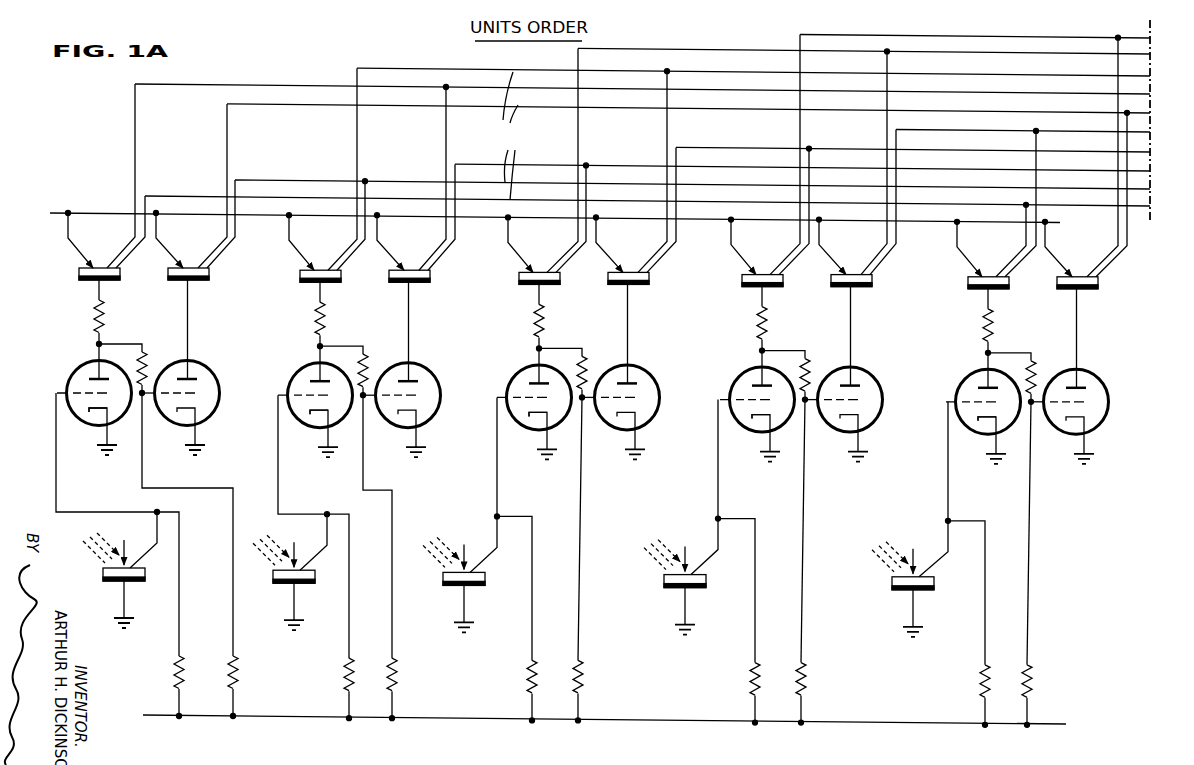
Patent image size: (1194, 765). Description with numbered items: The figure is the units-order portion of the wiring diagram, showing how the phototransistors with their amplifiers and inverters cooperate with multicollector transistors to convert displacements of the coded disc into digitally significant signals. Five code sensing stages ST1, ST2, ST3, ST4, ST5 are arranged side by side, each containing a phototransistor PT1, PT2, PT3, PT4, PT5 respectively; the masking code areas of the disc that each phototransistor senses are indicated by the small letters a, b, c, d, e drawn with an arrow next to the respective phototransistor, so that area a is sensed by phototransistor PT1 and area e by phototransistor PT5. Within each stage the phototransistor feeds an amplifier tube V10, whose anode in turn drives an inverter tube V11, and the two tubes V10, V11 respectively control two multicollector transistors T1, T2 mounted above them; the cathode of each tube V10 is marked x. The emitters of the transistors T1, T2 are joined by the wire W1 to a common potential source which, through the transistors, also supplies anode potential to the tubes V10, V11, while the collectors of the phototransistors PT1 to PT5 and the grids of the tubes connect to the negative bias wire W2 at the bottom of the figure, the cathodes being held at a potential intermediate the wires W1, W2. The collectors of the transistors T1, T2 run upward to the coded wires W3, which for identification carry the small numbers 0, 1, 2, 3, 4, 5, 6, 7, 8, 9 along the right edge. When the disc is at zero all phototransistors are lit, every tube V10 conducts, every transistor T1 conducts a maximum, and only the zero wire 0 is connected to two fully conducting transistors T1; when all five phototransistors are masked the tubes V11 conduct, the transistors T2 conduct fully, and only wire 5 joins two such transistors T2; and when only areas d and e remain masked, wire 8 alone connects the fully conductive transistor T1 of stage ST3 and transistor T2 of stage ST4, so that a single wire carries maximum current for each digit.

The multicollector transistor T1 is at (536, 166).
The multicollector transistor T2 is at (633, 169).
The amplifier tube V10 is at (526, 401).
The inverter tube V11 is at (643, 372).
The code sensing stage ST1 is at (59, 328).
The code sensing stage ST2 is at (320, 501).
The code sensing stage ST3 is at (501, 503).
The code sensing stage ST4 is at (717, 506).
The code sensing stage ST5 is at (948, 508).
The phototransistor PT1 is at (112, 570).
The phototransistor PT2 is at (285, 572).
The phototransistor PT3 is at (451, 574).
The phototransistor PT4 is at (666, 577).
The phototransistor PT5 is at (899, 579).
The common potential wire W1 is at (102, 212).
The negative bias potential wire W2 is at (470, 689).
The coded wires W3 is at (506, 136).
The masking code area a is at (123, 543).
The masking code area b is at (294, 545).
The masking code area c is at (463, 547).
The masking code area d is at (685, 550).
The masking code area e is at (912, 552).
The cathode x is at (542, 420).
The zero wire 0 is at (654, 203).
The wire one 1 is at (701, 190).
The wire two 2 is at (811, 172).
The wire three 3 is at (921, 155).
The wire four 4 is at (1031, 137).
The five wire 5 is at (690, 125).
The wire six 6 is at (643, 115).
The wire seven 7 is at (755, 107).
The eight wire 8 is at (866, 96).
The wire nine 9 is at (977, 88).